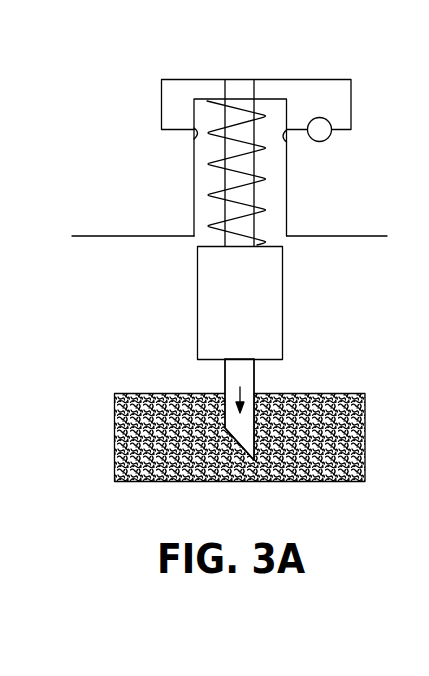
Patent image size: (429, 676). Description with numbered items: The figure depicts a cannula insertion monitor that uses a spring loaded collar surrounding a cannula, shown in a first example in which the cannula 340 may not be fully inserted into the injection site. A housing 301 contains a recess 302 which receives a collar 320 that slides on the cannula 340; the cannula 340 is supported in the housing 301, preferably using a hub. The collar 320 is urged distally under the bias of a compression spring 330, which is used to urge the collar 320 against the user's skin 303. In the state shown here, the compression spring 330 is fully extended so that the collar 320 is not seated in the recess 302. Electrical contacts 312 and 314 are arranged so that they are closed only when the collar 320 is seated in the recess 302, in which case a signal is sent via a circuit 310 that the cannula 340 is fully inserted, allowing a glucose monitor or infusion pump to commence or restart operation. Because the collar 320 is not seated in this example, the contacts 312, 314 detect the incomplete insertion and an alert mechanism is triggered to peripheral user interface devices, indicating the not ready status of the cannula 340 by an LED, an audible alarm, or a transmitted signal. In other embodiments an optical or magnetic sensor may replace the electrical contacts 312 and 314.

The housing 301 is at (128, 220).
The recess 302 is at (274, 232).
The user's skin 303 is at (312, 393).
The circuit 310 is at (190, 78).
The electrical contact 312 is at (196, 136).
The electrical contact 314 is at (285, 136).
The collar 320 is at (225, 325).
The compression spring 330 is at (268, 210).
The cannula 340 is at (223, 382).